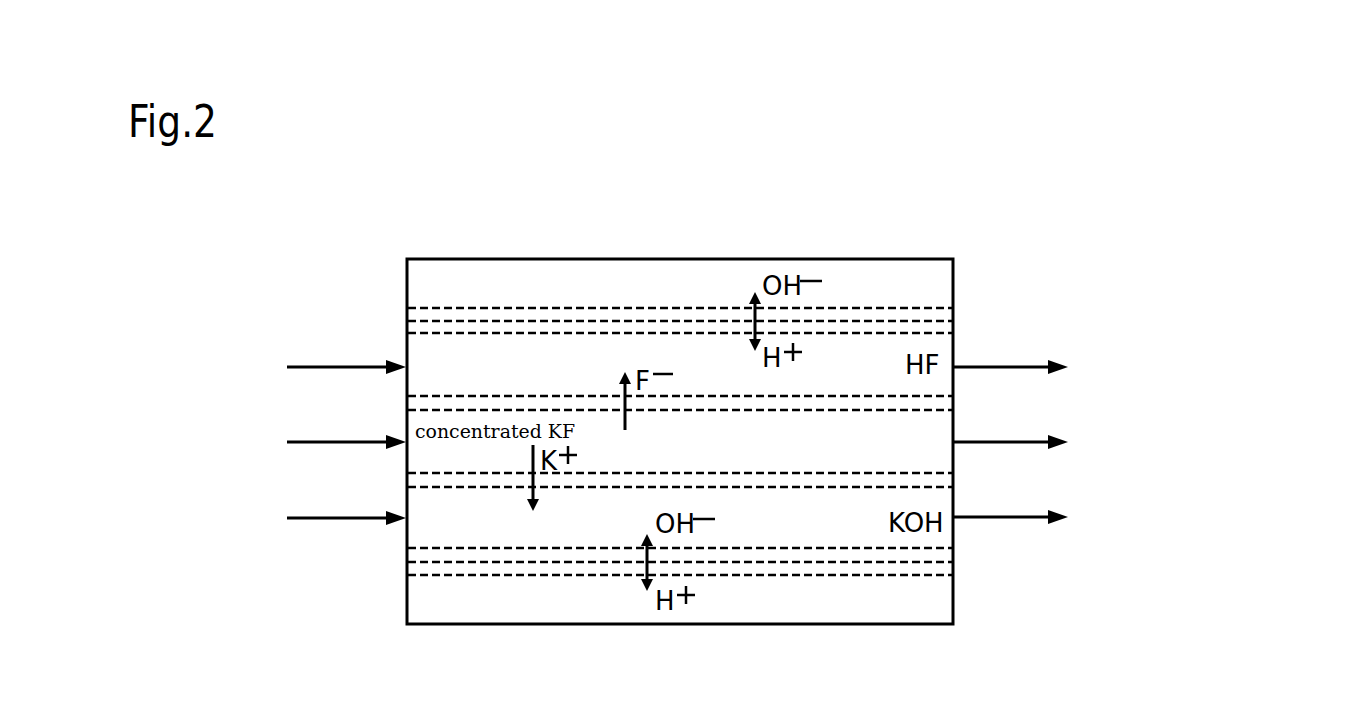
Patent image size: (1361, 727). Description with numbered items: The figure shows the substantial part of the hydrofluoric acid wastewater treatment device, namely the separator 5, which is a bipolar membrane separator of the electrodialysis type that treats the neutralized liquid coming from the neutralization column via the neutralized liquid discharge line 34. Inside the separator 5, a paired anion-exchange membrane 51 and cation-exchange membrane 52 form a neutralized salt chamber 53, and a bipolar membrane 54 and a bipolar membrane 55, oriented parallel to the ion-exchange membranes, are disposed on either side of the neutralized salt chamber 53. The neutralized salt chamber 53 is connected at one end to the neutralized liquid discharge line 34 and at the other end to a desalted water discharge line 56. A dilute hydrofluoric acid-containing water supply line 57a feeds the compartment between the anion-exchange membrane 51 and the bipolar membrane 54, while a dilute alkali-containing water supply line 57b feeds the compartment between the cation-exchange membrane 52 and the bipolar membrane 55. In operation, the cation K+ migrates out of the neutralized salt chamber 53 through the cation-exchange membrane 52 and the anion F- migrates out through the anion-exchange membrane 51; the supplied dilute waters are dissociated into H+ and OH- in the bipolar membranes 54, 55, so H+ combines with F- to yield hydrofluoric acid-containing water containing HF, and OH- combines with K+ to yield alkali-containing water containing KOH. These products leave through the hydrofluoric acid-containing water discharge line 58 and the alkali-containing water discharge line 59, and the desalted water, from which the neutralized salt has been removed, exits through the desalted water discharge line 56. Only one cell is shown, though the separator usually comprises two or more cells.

The separator 5 is at (880, 259).
The bipolar membrane 54 is at (410, 308).
The anion-exchange membrane 51 is at (407, 402).
The cation-exchange membrane 52 is at (407, 482).
The bipolar membrane 55 is at (407, 580).
The dilute hydrofluoric acid-containing water supply line 57a is at (317, 365).
The neutralized liquid discharge line 34 is at (340, 444).
The dilute alkali-containing water supply line 57b is at (315, 520).
The hydrofluoric acid-containing water discharge line 58 is at (1015, 365).
The neutralized salt chamber 53 is at (943, 424).
The desalted water discharge line 56 is at (1010, 446).
The alkali-containing water discharge line 59 is at (1020, 520).